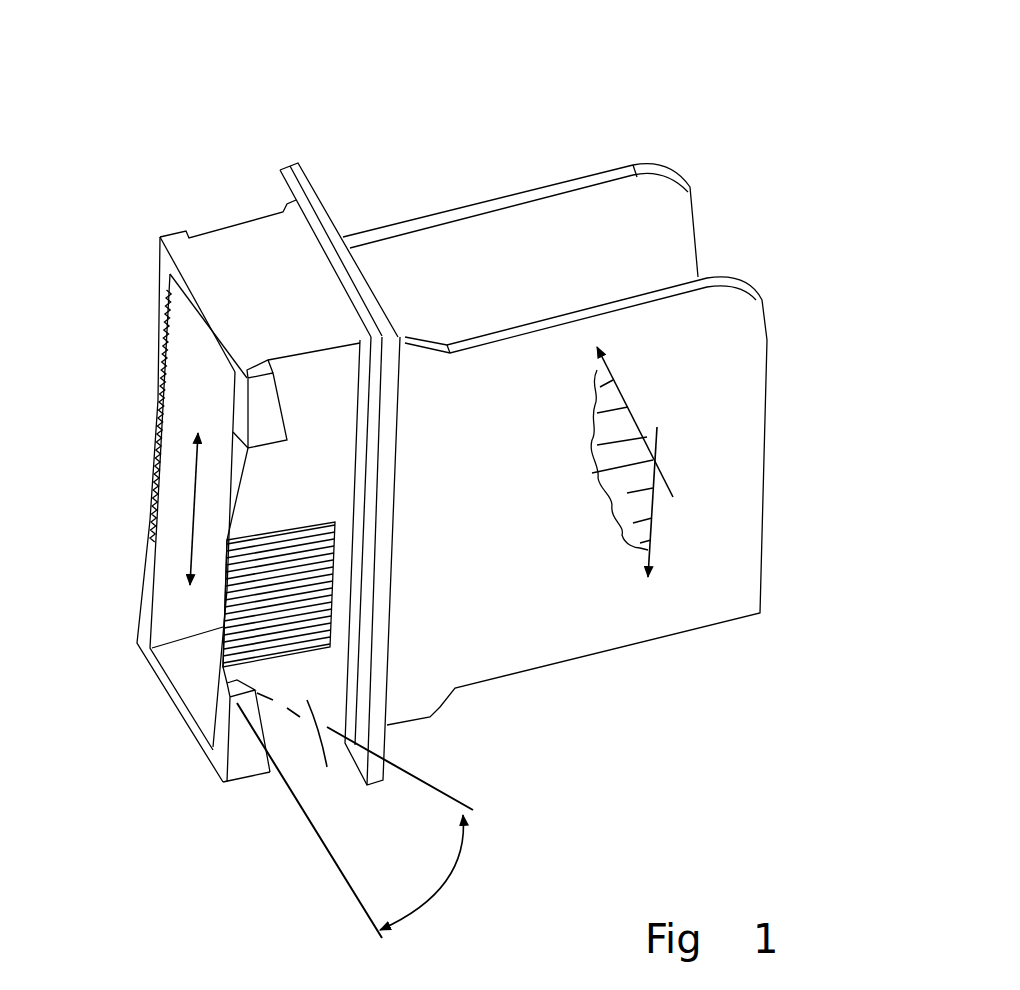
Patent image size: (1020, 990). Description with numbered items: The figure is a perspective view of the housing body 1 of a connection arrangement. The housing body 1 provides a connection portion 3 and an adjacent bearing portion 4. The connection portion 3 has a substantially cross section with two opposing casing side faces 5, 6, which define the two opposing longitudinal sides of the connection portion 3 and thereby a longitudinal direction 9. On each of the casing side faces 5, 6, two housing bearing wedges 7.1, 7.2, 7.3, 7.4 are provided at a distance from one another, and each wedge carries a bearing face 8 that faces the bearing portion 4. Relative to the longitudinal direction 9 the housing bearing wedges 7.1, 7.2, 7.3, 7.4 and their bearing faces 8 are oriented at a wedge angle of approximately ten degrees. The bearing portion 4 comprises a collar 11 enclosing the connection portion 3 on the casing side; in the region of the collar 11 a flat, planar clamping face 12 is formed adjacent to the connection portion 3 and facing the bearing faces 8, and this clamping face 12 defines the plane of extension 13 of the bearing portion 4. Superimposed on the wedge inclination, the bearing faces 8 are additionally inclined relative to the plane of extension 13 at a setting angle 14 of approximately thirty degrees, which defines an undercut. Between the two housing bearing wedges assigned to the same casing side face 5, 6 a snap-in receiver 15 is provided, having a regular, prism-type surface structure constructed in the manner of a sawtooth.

The housing body 1 is at (555, 365).
The connection portion 3 is at (279, 459).
The bearing portion 4 is at (298, 395).
The casing side face 5 is at (296, 756).
The casing side face 6 is at (220, 531).
The housing bearing wedge 7.1 is at (263, 408).
The housing bearing wedge 7.2 is at (238, 757).
The housing bearing wedge 7.3 is at (165, 288).
The housing bearing wedge 7.4 is at (142, 607).
The bearing face 8 is at (293, 395).
The longitudinal direction 9 is at (193, 523).
The collar 11 is at (355, 266).
The clamping face 12 is at (290, 197).
The plane of extension 13 is at (627, 497).
The setting angle 14 is at (437, 877).
The snap-in receiver 15 is at (138, 485).